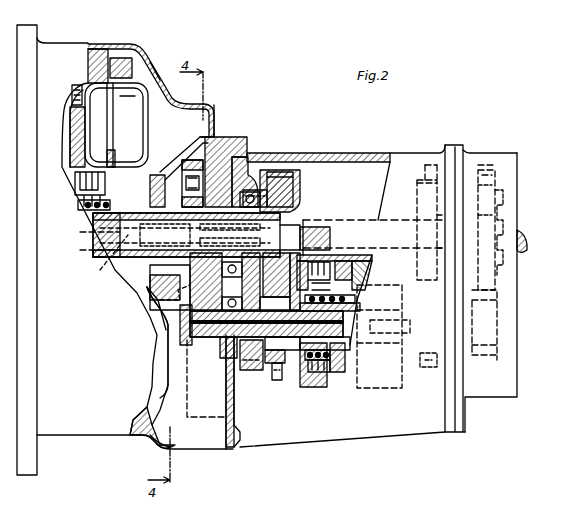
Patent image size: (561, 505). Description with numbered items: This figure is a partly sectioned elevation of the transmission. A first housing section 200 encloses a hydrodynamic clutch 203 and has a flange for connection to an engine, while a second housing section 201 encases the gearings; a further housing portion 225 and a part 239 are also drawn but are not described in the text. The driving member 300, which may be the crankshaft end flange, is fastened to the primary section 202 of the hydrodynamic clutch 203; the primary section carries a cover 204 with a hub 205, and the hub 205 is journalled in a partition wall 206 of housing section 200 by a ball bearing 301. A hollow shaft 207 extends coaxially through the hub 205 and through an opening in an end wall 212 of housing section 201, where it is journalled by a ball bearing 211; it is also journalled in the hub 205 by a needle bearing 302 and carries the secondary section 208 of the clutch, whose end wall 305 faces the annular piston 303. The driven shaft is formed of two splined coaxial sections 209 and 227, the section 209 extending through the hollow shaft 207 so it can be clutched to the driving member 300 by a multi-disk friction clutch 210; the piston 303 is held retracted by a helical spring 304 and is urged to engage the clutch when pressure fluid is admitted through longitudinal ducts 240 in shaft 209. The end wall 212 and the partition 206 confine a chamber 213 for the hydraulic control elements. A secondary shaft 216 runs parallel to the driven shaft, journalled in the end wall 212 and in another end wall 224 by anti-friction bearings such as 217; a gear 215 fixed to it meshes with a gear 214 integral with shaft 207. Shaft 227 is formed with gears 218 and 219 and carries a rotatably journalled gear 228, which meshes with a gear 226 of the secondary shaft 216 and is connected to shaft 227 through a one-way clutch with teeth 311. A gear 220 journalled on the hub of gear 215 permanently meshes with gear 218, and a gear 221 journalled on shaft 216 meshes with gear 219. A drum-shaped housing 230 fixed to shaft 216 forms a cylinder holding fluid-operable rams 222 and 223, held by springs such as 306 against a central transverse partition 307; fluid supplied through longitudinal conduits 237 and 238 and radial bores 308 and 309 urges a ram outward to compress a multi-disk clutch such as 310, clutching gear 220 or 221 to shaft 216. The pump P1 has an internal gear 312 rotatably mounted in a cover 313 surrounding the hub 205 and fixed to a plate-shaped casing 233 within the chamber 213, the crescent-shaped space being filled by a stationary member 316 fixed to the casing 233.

The first housing section 200 is at (62, 43).
The second housing section 201 is at (332, 160).
The primary section 202 is at (98, 62).
The hydrodynamic clutch 203 is at (150, 75).
The cover 204 is at (137, 47).
The hub 205 is at (196, 235).
The partition wall 206 is at (188, 137).
The hollow shaft 207 is at (172, 210).
The secondary section 208 is at (141, 118).
The shaft section 209 is at (103, 240).
The multi-disk friction clutch 210 is at (64, 140).
The ball bearing 211 is at (252, 190).
The end wall 212 is at (232, 447).
The chamber 213 is at (160, 440).
The gear 214 is at (255, 191).
The gear 215 is at (255, 371).
The secondary shaft 216 is at (283, 363).
The anti-friction bearing 217 is at (223, 350).
The gear 218 is at (282, 172).
The gear 219 is at (427, 165).
The gear 220 is at (275, 380).
The gear 221 is at (425, 370).
The fluid-operable ram 222 is at (345, 255).
The fluid-operable ram 223 is at (358, 261).
The end wall 224 is at (452, 440).
The housing 225 is at (518, 396).
The gear 226 is at (497, 340).
The shaft section 227 is at (525, 235).
The gear 228 is at (497, 165).
The drum-shaped housing 230 is at (312, 388).
The plate-shaped casing 233 is at (160, 395).
The longitudinal conduit 237 is at (323, 374).
The longitudinal conduit 238 is at (330, 355).
The keyway 239 is at (137, 210).
The longitudinal duct 240 is at (101, 258).
The driving member 300 is at (78, 185).
The ball bearing 301 is at (160, 175).
The needle bearing 302 is at (144, 300).
The annular piston 303 is at (80, 207).
The helical spring 304 is at (95, 232).
The end wall 305 is at (135, 283).
The spring 306 is at (333, 365).
The central transverse partition 307 is at (355, 283).
The radial bore 308 is at (347, 348).
The radial bore 309 is at (350, 300).
The multi-disk clutch 310 is at (318, 262).
The teeth 311 is at (506, 196).
The internal gear 312 is at (195, 305).
The cover 313 is at (168, 160).
The stationary member 316 is at (192, 178).
The pump P1 is at (160, 308).